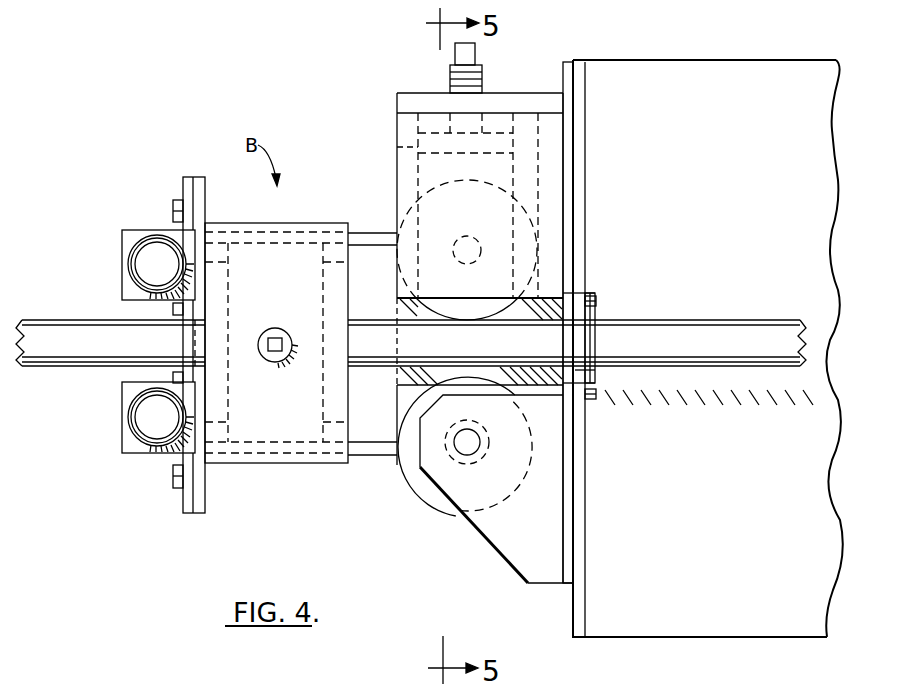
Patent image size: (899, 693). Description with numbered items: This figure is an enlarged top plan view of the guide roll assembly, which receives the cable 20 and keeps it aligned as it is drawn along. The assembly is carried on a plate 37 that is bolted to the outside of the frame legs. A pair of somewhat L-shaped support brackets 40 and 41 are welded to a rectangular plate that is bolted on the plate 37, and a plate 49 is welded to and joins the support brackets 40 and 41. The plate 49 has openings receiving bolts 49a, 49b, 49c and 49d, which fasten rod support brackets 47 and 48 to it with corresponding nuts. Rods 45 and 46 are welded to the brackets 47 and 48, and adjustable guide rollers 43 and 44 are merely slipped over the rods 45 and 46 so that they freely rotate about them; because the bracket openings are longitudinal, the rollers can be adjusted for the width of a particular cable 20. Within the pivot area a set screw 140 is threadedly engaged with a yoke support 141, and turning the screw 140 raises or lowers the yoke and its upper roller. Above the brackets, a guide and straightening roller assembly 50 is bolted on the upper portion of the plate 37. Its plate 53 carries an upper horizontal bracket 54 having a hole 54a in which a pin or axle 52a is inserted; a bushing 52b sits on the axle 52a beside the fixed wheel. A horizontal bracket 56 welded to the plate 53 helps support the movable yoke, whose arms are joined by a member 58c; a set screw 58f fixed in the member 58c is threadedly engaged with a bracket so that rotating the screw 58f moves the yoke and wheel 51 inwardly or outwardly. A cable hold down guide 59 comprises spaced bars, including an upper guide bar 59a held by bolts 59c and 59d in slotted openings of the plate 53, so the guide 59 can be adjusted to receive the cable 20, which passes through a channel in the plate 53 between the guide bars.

The cable 20 is at (48, 368).
The plate 37 is at (580, 630).
The support bracket 40 is at (370, 456).
The support bracket 41 is at (380, 235).
The adjustable guide roller 43 is at (122, 410).
The adjustable guide roller 44 is at (122, 258).
The rod 45 is at (155, 430).
The rod 46 is at (158, 248).
The rod support bracket 47 is at (130, 440).
The rod support bracket 48 is at (130, 292).
The plate 49 is at (200, 500).
The bolt 49a is at (176, 480).
The bolt 49b is at (177, 377).
The bolt 49c is at (173, 309).
The bolt 49d is at (176, 200).
The guide and straightening roller assembly 50 is at (513, 86).
The wheel 51 is at (488, 320).
The pin or axle 52a is at (462, 440).
The bushing 52b is at (563, 492).
The plate 53 is at (567, 70).
The upper horizontal bracket 54 is at (538, 548).
The hole 54a is at (524, 452).
The horizontal bracket 56 is at (499, 181).
The member 58c is at (397, 147).
The set screw 58f is at (472, 50).
The cable hold down guide 59 is at (606, 317).
The upper guide bar 59a is at (590, 372).
The bolt 59c is at (592, 400).
The bolt 59d is at (638, 274).
The set screw 140 is at (275, 328).
The yoke support 141 is at (283, 415).